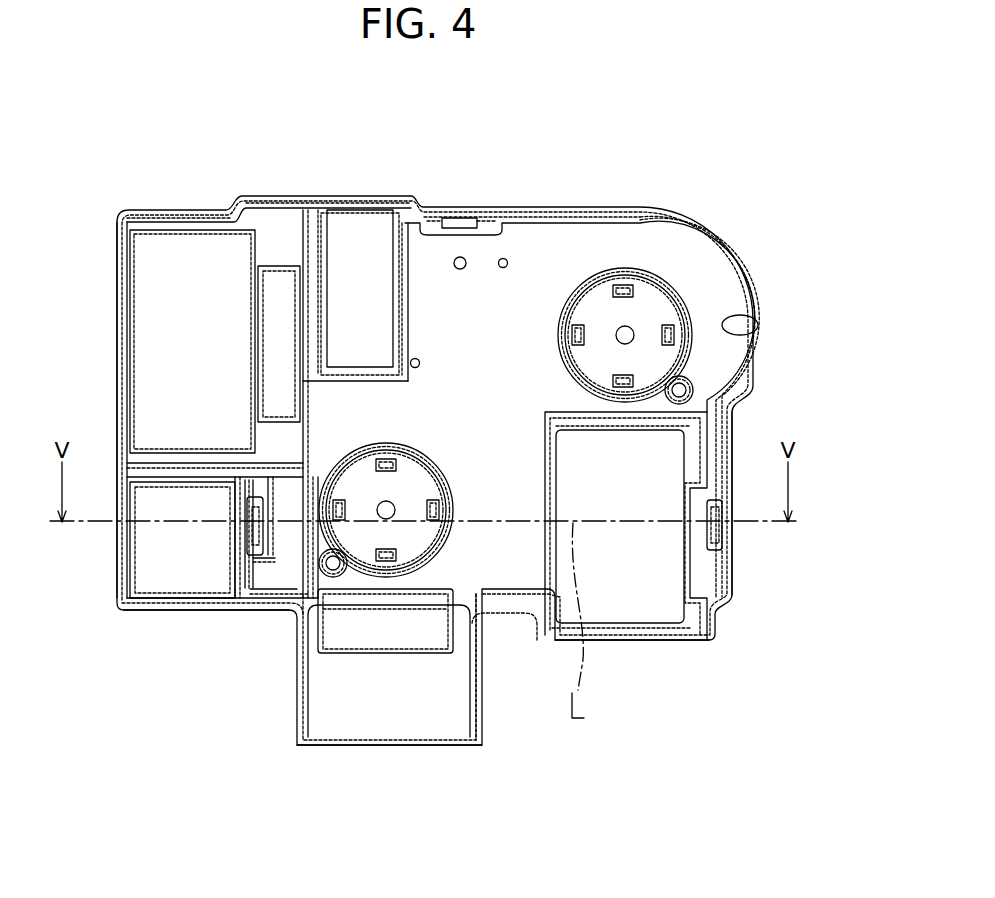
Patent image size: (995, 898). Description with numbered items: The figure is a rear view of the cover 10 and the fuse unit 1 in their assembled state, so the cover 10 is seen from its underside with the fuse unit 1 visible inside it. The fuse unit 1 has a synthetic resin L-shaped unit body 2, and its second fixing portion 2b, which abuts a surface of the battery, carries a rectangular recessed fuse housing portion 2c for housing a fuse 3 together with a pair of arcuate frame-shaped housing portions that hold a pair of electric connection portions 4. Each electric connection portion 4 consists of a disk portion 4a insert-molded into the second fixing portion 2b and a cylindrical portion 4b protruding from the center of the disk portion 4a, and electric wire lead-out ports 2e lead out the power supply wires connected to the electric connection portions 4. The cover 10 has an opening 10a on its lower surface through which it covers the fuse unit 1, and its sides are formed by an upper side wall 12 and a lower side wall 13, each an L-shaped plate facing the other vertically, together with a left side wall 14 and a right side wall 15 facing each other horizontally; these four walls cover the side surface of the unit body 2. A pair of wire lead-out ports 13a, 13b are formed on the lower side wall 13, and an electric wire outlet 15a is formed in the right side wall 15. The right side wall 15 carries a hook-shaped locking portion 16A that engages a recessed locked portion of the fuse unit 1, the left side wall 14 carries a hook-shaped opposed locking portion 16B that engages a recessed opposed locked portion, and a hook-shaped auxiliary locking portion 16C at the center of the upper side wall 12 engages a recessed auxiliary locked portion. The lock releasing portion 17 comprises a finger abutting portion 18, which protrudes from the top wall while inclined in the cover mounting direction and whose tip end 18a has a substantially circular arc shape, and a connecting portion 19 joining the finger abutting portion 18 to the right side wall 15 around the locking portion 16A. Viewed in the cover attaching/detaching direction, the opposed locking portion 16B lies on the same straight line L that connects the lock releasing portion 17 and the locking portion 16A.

The fuse unit 1 is at (423, 663).
The unit body 2 is at (609, 210).
The second fixing portion 2b is at (571, 243).
The fuse housing portion 2c is at (383, 235).
The electric wire lead-out port 2e is at (651, 617).
The fuse 3 is at (341, 230).
The electric connection portion 4 is at (453, 494).
The disk portion 4a is at (592, 298).
The cylindrical portion 4b is at (627, 327).
The cover 10 is at (777, 357).
The opening 10a is at (745, 332).
The upper side wall 12 is at (518, 207).
The lower side wall 13 is at (502, 613).
The wire lead-out port 13a is at (403, 746).
The wire lead-out port 13b is at (611, 640).
The left side wall 14 is at (743, 443).
The right side wall 15 is at (233, 572).
The electric wire outlet 15a is at (112, 288).
The locking portion 16A is at (250, 532).
The opposed locking portion 16B is at (718, 530).
The auxiliary locking portion 16C is at (462, 218).
The lock releasing portion 17 is at (112, 603).
The finger abutting portion 18 is at (155, 573).
The tip end 18a is at (117, 480).
The connecting portion 19 is at (172, 458).